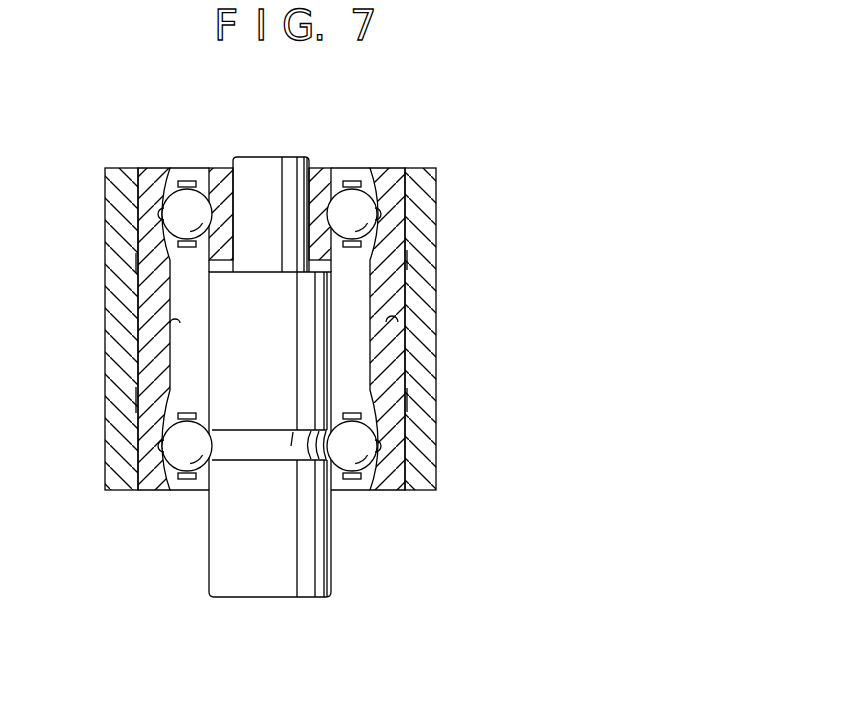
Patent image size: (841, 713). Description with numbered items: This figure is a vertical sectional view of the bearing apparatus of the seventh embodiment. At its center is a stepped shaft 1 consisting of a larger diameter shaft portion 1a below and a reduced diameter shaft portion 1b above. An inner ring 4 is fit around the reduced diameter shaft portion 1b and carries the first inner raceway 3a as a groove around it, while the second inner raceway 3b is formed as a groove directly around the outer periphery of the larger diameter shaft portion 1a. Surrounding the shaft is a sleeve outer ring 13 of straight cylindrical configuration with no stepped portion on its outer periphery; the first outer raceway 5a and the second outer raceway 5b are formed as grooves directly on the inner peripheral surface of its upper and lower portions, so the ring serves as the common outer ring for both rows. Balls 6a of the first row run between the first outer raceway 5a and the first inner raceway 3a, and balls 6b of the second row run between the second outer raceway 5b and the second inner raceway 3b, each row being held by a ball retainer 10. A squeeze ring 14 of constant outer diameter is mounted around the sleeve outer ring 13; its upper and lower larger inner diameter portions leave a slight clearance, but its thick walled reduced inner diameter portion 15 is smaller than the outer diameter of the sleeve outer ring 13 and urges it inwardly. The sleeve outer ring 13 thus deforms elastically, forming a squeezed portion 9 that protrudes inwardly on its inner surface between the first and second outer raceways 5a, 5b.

The stepped shaft 1 is at (270, 382).
The larger diameter shaft portion 1a is at (255, 585).
The reduced diameter shaft portion 1b is at (257, 178).
The first inner raceway 3a is at (201, 180).
The second inner raceway 3b is at (255, 452).
The inner ring 4 is at (225, 178).
The first outer raceway 5a is at (163, 227).
The second outer raceway 5b is at (165, 455).
The balls for the first row 6a is at (177, 203).
The balls for the second row 6b is at (175, 432).
The squeezed portion 9 is at (176, 327).
The ball retainer 10 is at (356, 186).
The sleeve outer ring 13 is at (397, 212).
The squeeze ring 14 is at (422, 257).
The reduced inner diameter portion 15 is at (388, 318).